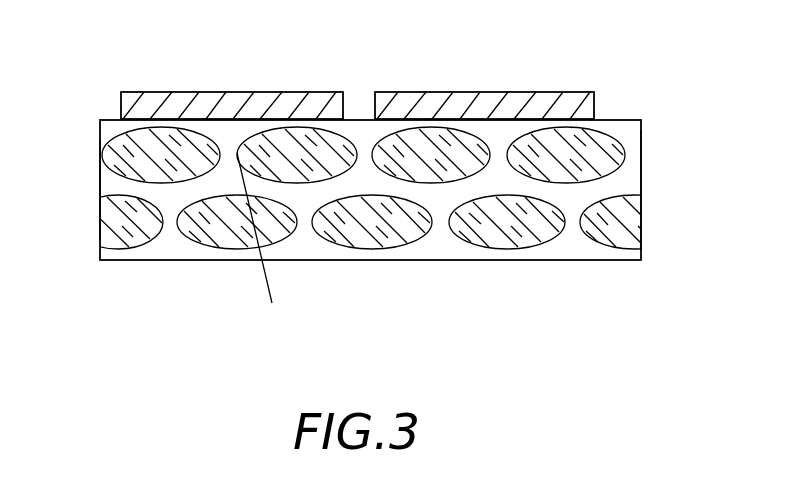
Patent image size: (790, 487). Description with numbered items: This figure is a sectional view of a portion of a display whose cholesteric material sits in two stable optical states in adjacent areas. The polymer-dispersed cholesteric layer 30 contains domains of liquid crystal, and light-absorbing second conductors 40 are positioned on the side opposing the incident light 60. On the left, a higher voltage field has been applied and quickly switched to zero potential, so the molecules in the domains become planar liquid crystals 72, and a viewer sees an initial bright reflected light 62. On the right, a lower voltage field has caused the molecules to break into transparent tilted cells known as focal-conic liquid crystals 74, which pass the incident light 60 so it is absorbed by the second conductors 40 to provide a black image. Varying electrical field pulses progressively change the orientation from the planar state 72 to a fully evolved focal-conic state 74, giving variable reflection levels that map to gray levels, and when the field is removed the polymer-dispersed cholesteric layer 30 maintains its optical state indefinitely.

The polymer-dispersed cholesteric layer 30 is at (650, 120).
The second conductors 40 is at (434, 92).
The incident light 60 is at (237, 153).
The reflected light 62 is at (272, 305).
The planar liquid crystals 72 is at (104, 220).
The focal-conic liquid crystals 74 is at (628, 200).